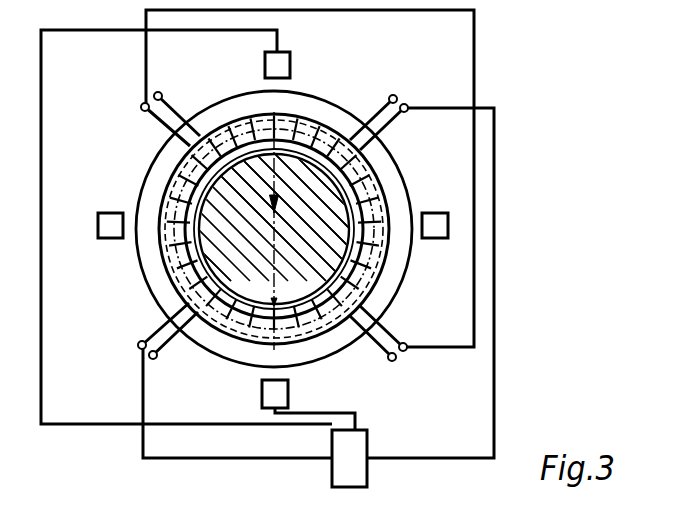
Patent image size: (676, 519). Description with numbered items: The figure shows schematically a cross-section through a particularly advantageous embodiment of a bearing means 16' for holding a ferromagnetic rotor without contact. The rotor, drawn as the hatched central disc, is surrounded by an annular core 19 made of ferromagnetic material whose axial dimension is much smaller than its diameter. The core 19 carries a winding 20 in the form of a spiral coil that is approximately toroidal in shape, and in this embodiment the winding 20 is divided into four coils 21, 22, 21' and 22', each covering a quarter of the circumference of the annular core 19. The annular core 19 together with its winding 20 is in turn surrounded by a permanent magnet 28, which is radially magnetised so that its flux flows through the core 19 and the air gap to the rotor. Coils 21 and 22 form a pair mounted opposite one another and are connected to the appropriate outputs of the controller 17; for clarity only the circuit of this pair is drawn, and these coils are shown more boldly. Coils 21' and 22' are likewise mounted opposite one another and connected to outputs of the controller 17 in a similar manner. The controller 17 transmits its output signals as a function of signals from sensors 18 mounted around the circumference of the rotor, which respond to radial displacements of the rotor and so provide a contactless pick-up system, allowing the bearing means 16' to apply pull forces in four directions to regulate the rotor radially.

The bearing means 16' is at (259, 224).
The controller 17 is at (352, 448).
The sensors 18 is at (288, 392).
The annular core 19 is at (359, 185).
The winding 20 is at (223, 123).
The coil 21 is at (245, 223).
The coil 21' is at (274, 198).
The coil 22 is at (319, 229).
The coil 22' is at (274, 263).
The permanent magnet 28 is at (393, 271).